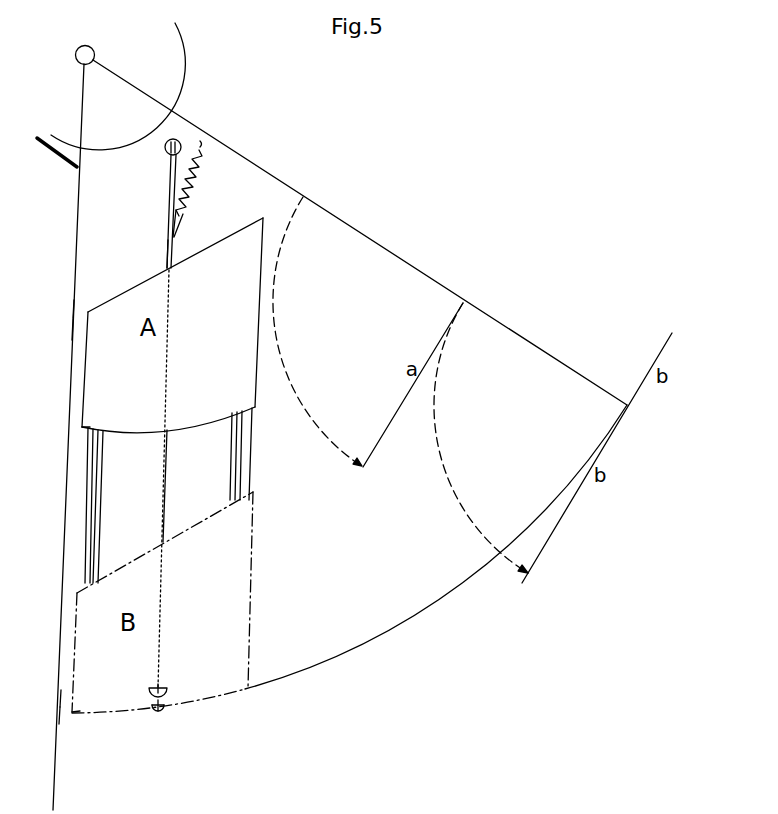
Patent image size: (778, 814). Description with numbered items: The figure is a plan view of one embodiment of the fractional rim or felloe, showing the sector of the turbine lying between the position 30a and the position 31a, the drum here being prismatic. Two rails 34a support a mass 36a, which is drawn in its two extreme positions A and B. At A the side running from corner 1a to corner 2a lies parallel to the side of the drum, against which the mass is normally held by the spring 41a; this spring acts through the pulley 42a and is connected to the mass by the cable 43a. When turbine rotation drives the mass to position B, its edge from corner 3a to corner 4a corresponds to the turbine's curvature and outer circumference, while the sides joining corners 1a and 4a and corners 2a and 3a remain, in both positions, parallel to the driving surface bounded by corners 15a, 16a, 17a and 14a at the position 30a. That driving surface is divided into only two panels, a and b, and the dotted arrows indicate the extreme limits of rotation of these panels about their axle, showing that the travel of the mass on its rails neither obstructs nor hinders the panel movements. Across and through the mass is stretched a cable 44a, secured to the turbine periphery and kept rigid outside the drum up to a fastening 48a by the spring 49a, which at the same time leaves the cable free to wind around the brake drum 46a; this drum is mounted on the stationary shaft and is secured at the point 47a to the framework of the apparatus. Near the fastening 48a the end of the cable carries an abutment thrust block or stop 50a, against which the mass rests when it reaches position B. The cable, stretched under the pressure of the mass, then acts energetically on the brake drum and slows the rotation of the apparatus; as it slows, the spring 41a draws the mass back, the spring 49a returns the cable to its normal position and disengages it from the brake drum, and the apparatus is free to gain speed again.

The corner of the mass 1a is at (106, 489).
The corner of the mass 2a is at (251, 442).
The corner of the mass 3a is at (164, 550).
The corner of the mass 4a is at (90, 562).
The corner of the driving surface 14a is at (44, 718).
The corner of the driving surface 15a is at (48, 319).
The corner of the driving surface 16a is at (61, 331).
The corner of the driving surface 17a is at (57, 707).
The position of the sector 30a is at (70, 428).
The position of the sector 31a is at (382, 321).
The rails 34a is at (103, 502).
The mass 36a is at (170, 411).
The spring 41a is at (165, 149).
The pulley 42a is at (170, 157).
The cable 43a is at (168, 230).
The cable 44a is at (166, 481).
The brake drum 46a is at (115, 148).
The fastening to framework 47a is at (76, 166).
The fastening 48a is at (160, 712).
The spring 49a is at (188, 211).
The abutment thrust block or stop 50a is at (173, 681).